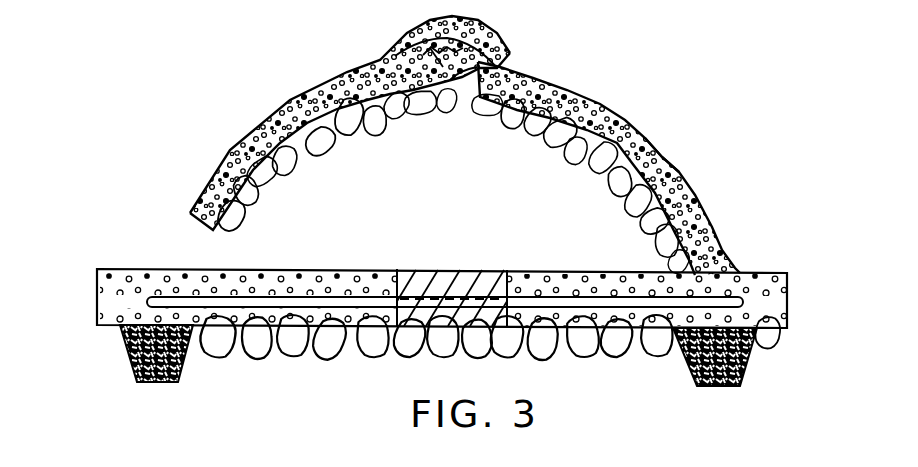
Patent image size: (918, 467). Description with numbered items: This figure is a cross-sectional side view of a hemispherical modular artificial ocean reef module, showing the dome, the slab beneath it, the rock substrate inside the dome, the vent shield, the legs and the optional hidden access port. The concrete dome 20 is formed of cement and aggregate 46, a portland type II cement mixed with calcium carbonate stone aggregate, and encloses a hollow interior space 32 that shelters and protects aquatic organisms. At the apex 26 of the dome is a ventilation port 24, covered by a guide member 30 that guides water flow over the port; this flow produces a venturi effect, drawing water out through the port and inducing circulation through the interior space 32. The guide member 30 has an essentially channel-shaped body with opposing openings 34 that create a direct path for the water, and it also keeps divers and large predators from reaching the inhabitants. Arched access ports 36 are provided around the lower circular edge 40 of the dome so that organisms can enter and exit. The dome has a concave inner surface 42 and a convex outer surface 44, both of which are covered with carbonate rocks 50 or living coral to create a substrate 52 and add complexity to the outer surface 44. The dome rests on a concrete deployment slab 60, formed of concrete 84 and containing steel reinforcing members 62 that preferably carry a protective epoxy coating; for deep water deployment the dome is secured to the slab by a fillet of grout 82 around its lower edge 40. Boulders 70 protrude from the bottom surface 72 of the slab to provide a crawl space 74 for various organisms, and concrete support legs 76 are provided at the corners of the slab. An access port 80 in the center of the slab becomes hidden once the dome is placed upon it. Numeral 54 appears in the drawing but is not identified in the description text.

The concrete dome 20 is at (658, 148).
The ventilation port 24 is at (537, 46).
The apex 26 is at (487, 30).
The guide member 30 is at (458, 18).
The hollow interior space 32 is at (472, 213).
The opposing openings 34 is at (385, 40).
The access port 36 is at (184, 235).
The lower circular edge 40 is at (743, 270).
The concave inner surface 42 is at (600, 103).
The convex outer surface 44 is at (97, 325).
The aggregate 46 is at (719, 197).
The carbonate rocks 50 is at (645, 184).
The substrate 52 is at (340, 155).
The top element 54 is at (359, 4).
The concrete deployment slab 60 is at (572, 337).
The steel reinforcing members 62 is at (372, 333).
The boulders 70 is at (413, 343).
The bottom surface 72 is at (305, 378).
The crawl space 74 is at (690, 398).
The concrete support legs 76 is at (131, 365).
The access port 80 is at (455, 327).
The fillet of grout 82 is at (560, 88).
The concrete 84 is at (298, 101).